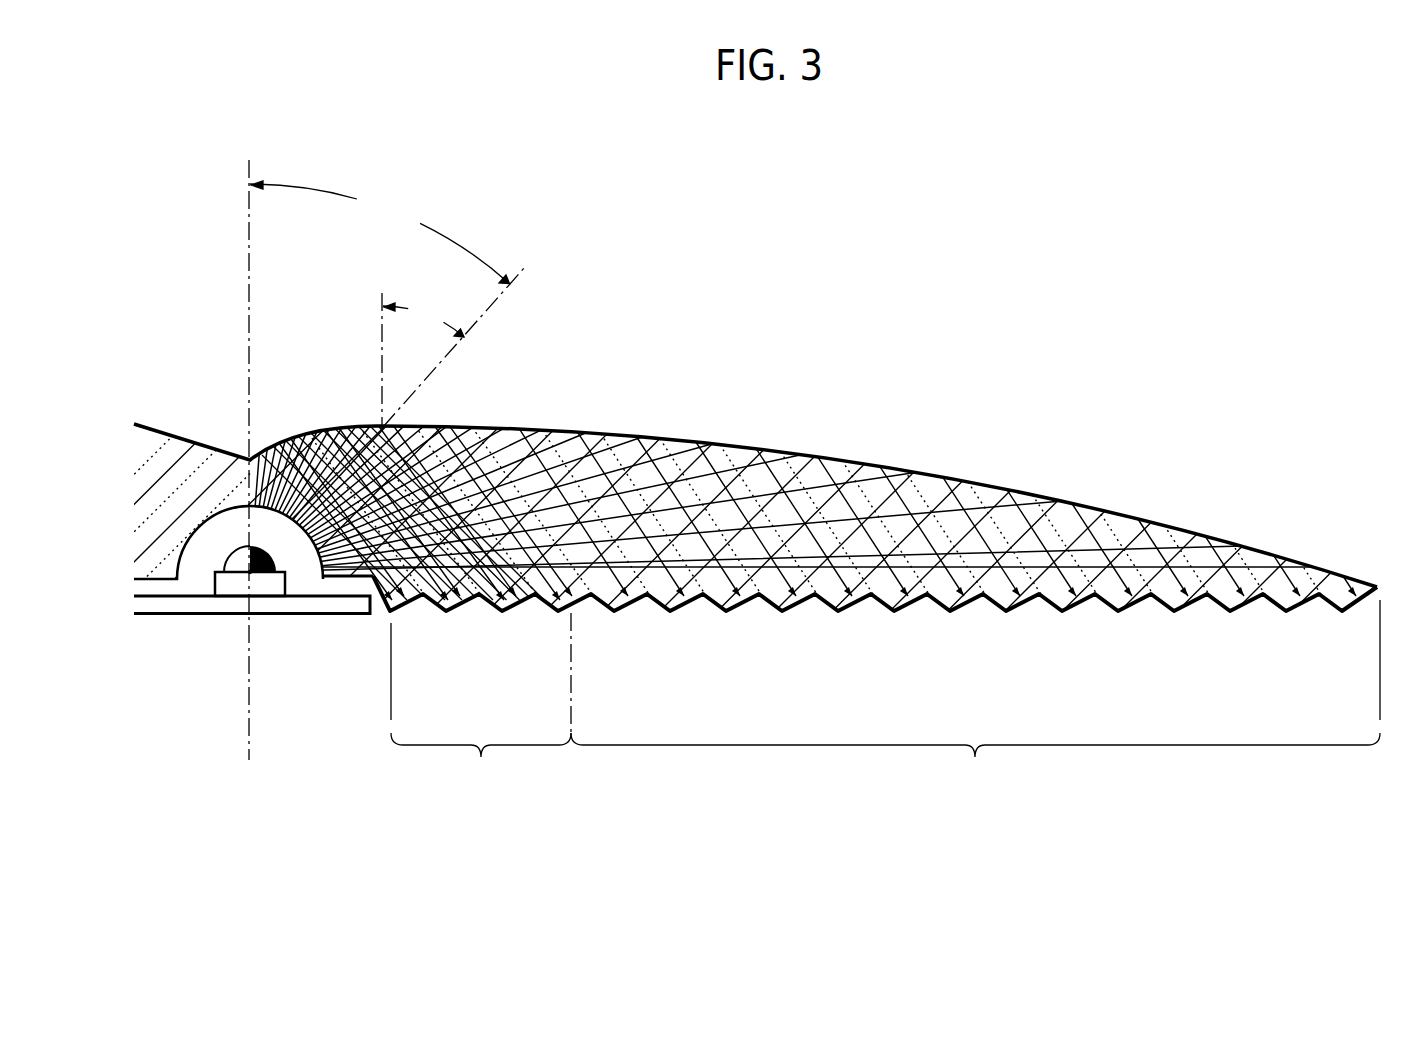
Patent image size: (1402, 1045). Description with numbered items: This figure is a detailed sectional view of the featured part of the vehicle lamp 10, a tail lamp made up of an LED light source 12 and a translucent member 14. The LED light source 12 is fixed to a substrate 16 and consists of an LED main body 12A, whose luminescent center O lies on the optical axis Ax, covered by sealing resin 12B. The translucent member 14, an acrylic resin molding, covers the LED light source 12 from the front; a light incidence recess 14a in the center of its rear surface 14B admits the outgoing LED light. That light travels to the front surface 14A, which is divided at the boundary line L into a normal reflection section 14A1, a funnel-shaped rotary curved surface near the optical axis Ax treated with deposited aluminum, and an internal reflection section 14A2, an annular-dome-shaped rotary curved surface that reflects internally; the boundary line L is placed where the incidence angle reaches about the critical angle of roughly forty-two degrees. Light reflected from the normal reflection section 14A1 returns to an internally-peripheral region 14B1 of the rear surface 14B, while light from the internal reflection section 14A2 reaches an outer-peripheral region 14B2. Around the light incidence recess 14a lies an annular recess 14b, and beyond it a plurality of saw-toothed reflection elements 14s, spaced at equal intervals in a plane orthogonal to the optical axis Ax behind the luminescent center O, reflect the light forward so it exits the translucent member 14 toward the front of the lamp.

The vehicle lamp 10 is at (1012, 246).
The LED light source 12 is at (290, 580).
The LED main body (LED chip) 12A is at (232, 573).
The sealing plastic or resin 12B is at (226, 553).
The translucent member 14 is at (983, 462).
The front surface 14A is at (792, 455).
The normal reflection section 14A1 is at (307, 430).
The internal reflection section 14A2 is at (652, 437).
The rear surface 14B is at (805, 598).
The internally-peripheral region 14B1 is at (481, 702).
The outer-peripheral region 14B2 is at (975, 696).
The light incidence recess 14a is at (232, 510).
The annular recess 14b is at (350, 580).
The reflection elements 14s is at (1015, 610).
The substrate 16 is at (287, 603).
The luminescent center O is at (255, 592).
The optical axis Ax is at (248, 263).
The boundary line L is at (383, 427).